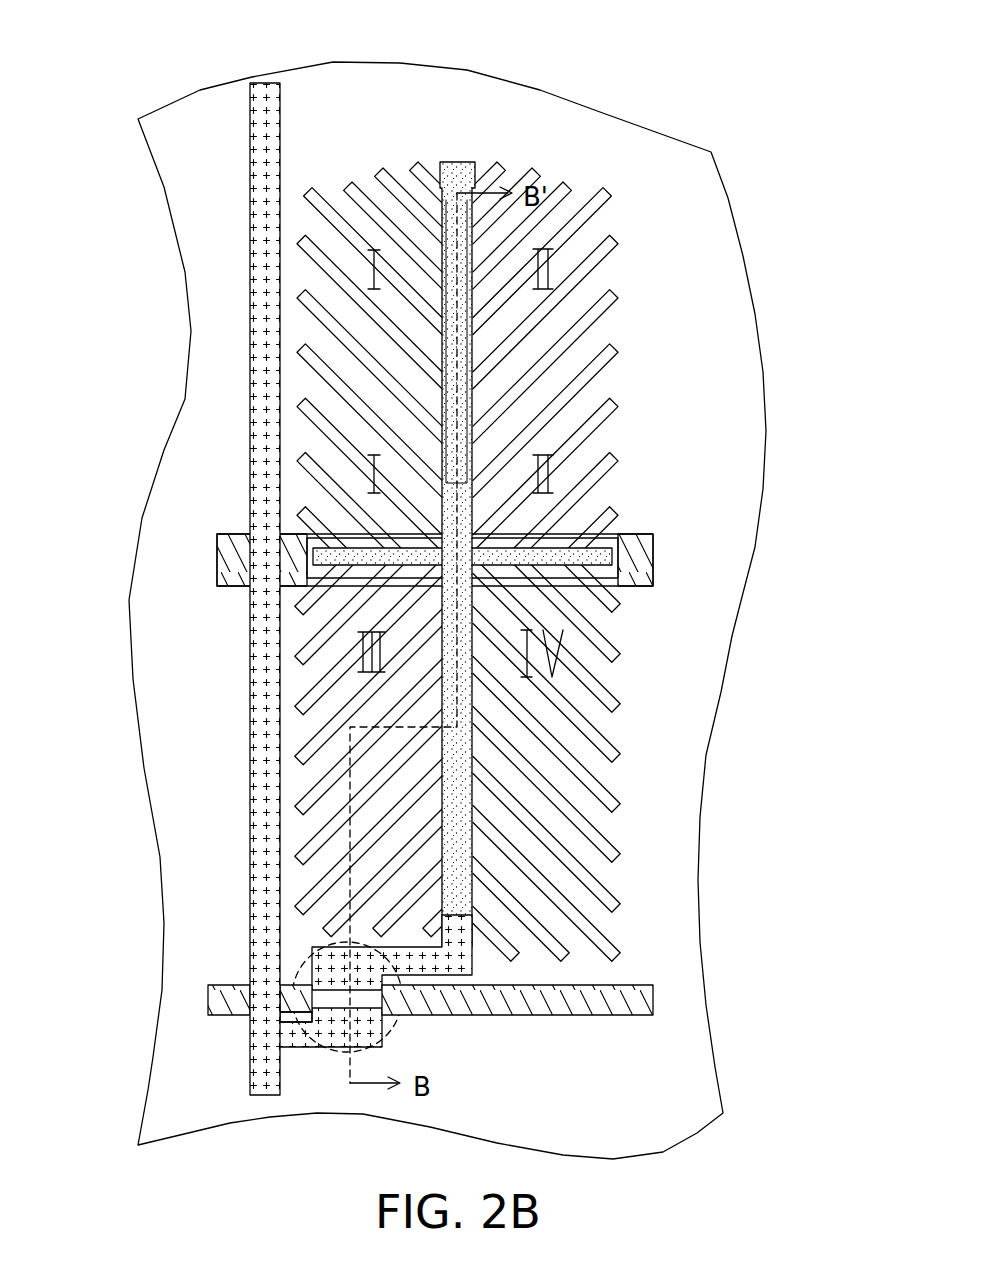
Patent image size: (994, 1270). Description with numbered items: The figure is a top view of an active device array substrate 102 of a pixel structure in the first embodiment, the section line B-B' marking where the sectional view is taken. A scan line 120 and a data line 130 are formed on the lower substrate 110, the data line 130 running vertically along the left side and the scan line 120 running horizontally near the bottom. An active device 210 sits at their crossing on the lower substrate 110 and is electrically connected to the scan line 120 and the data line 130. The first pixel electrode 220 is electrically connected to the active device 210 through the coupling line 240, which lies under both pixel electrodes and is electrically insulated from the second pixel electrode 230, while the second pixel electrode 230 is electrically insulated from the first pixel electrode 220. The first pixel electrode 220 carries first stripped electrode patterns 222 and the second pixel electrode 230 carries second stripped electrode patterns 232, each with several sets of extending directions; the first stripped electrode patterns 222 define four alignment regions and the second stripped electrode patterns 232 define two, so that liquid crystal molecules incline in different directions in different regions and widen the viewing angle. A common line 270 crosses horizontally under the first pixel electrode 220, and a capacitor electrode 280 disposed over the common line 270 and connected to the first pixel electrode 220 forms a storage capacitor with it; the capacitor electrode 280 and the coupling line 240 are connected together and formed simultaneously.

The active device array substrate 102 is at (495, 618).
The lower substrate 110 is at (621, 1097).
The scan line 120 is at (625, 1005).
The data line 130 is at (250, 808).
The active device 210 is at (247, 1077).
The first pixel electrode 220 is at (297, 660).
The first stripped electrode patterns 222 is at (604, 701).
The second pixel electrode 230 is at (454, 483).
The second stripped electrode patterns 232 is at (600, 195).
The coupling line 240 is at (462, 462).
The common line 270 is at (218, 562).
The capacitor electrode 280 is at (308, 540).